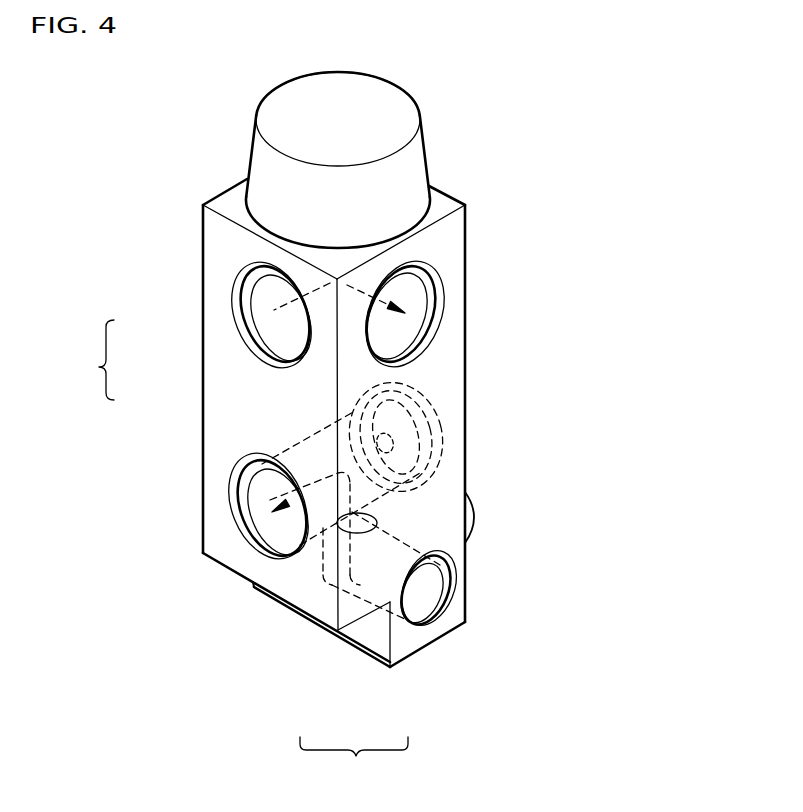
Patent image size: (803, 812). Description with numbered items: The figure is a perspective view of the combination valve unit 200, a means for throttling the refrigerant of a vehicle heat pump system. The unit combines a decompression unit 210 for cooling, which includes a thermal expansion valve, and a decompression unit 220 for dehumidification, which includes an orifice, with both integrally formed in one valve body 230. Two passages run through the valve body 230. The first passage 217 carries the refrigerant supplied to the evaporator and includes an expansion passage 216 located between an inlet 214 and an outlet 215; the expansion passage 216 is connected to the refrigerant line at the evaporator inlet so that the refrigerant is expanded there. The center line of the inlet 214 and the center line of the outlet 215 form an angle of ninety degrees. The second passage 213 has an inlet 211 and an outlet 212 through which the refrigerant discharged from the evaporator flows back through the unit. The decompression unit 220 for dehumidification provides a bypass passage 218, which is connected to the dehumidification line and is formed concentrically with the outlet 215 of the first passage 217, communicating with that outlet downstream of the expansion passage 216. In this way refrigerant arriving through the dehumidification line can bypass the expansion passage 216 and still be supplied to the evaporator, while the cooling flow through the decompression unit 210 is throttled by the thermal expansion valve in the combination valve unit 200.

The combination valve unit 200 is at (535, 236).
The decompression unit for cooling 210 is at (486, 349).
The inlet 211 is at (280, 318).
The outlet 212 is at (395, 322).
The second passage 213 is at (86, 360).
The inlet 214 is at (420, 598).
The outlet 215 is at (287, 532).
The expansion passage 216 is at (358, 527).
The first passage 217 is at (354, 763).
The bypass passage 218 is at (430, 420).
The decompression unit for dehumidification 220 is at (406, 457).
The valve body 230 is at (457, 238).